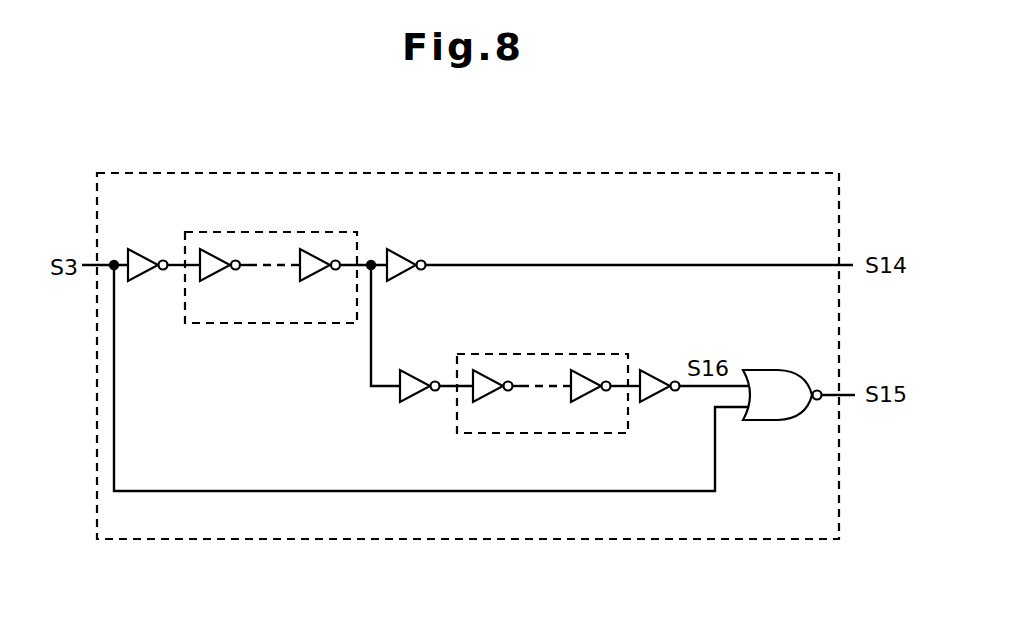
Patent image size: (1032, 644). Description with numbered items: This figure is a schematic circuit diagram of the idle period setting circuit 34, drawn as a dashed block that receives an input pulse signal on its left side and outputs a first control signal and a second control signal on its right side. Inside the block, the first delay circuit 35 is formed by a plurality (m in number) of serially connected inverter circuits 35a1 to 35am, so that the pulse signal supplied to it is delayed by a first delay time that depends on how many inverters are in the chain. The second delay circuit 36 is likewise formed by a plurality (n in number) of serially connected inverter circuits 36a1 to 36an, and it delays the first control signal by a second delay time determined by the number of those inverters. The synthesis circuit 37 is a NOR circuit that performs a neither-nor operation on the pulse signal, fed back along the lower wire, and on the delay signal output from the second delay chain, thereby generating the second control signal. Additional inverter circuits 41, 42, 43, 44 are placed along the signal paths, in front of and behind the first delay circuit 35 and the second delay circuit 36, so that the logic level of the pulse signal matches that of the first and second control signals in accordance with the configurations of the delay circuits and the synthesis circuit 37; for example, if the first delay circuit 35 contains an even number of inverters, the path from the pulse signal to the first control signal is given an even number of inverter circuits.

The idle period setting circuit 34 is at (468, 324).
The first delay circuit 35 is at (271, 317).
The inverter circuit 35a1 is at (228, 257).
The inverter circuit 35am is at (328, 256).
The second delay circuit 36 is at (542, 363).
The inverter circuit 36a1 is at (492, 394).
The inverter circuit 36an is at (591, 395).
The synthesis circuit 37 is at (767, 369).
The inverter circuit 41 is at (144, 254).
The inverter circuit 42 is at (397, 249).
The inverter circuit 43 is at (420, 378).
The inverter circuit 44 is at (657, 374).